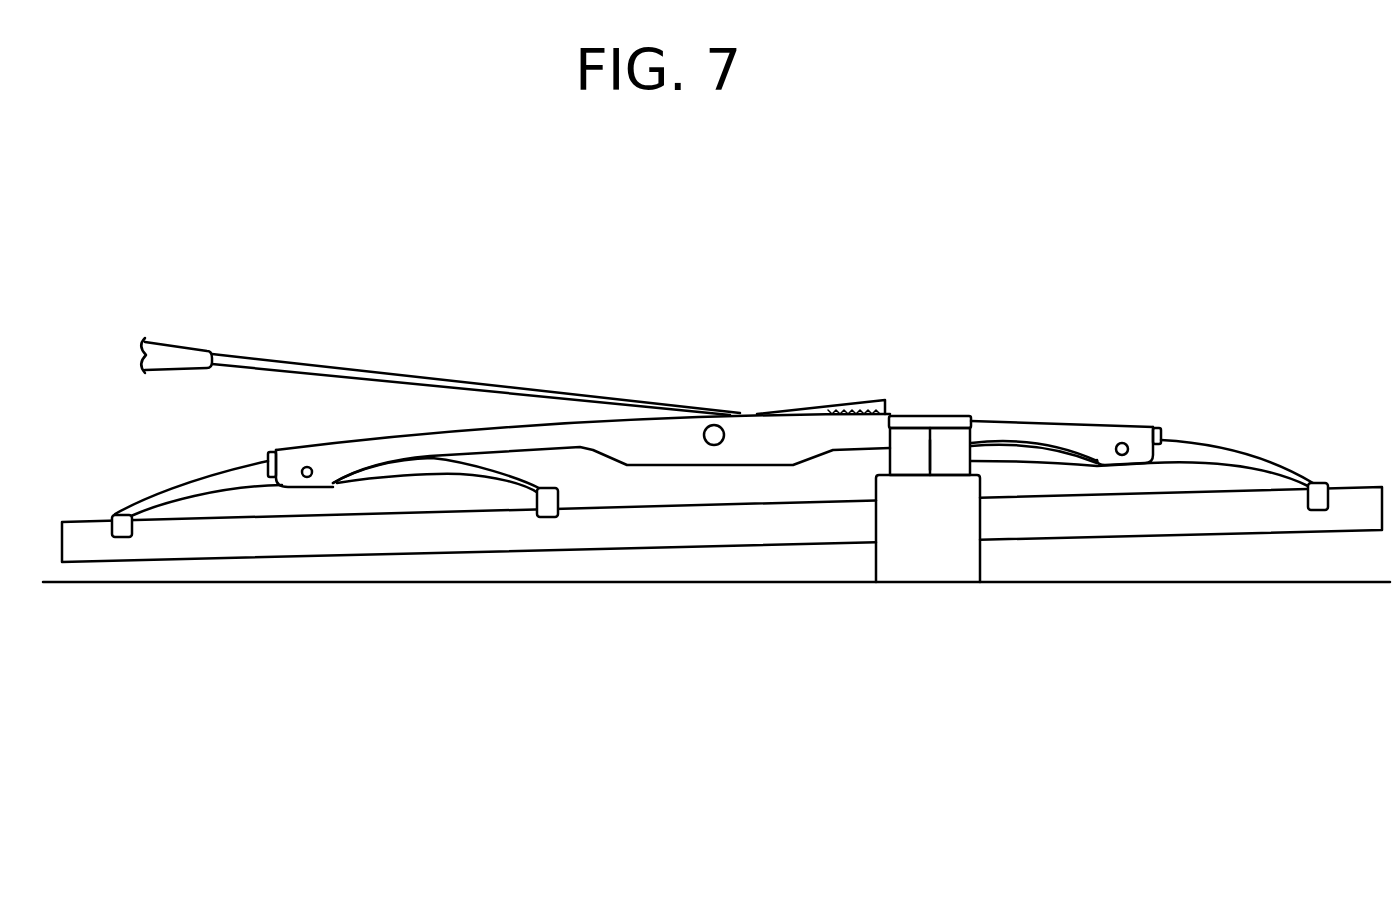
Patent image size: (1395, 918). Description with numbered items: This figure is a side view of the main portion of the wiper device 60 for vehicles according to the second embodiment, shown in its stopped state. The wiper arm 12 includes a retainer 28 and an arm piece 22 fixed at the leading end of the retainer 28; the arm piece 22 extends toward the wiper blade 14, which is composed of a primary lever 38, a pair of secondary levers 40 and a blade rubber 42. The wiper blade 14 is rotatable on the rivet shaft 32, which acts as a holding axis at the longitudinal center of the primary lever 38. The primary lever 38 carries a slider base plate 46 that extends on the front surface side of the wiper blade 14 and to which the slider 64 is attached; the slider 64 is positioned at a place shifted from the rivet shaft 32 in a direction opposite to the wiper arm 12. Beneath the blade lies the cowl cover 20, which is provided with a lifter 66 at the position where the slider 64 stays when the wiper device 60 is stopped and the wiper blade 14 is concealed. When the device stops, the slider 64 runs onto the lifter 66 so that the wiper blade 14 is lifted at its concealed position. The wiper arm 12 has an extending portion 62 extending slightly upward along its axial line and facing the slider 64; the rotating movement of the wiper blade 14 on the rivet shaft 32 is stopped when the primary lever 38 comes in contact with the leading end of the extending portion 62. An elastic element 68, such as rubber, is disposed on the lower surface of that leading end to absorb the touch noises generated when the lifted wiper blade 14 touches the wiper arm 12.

The wiper arm 12 is at (440, 324).
The wiper blade 14 is at (1039, 388).
The cowl cover 20 is at (1079, 578).
The arm piece 22 is at (397, 375).
The retainer 28 is at (200, 352).
The rivet shaft 32 is at (722, 426).
The primary lever 38 is at (1103, 432).
The secondary levers 40 is at (248, 475).
The blade rubber 42 is at (1348, 508).
The slider base plate 46 is at (957, 418).
The wiper device 60 is at (861, 434).
The extending portion 62 is at (843, 407).
The slider 64 is at (945, 468).
The lifter 66 is at (957, 555).
The elastic element 68 is at (887, 418).